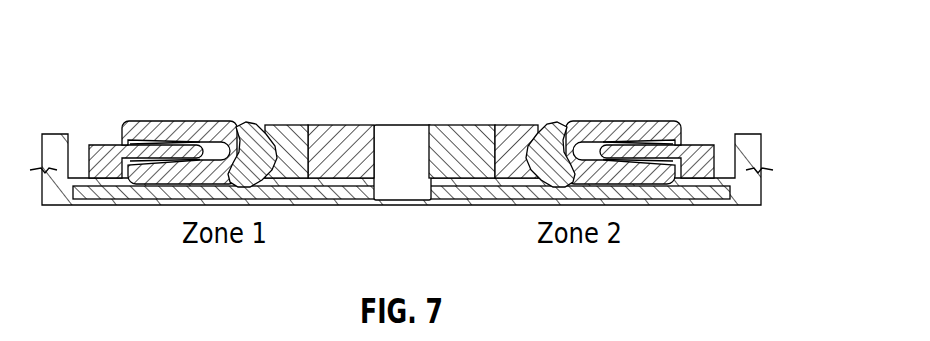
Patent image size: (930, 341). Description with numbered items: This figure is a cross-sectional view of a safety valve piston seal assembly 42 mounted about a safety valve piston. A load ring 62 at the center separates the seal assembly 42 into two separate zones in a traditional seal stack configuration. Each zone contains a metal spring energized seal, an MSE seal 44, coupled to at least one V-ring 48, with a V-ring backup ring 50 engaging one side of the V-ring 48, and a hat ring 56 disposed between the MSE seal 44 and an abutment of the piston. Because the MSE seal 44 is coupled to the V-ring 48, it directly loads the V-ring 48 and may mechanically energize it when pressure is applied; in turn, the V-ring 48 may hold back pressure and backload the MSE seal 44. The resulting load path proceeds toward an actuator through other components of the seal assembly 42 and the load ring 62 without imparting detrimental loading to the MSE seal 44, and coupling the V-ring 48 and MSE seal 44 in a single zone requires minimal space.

The safety valve piston seal assembly 42 is at (750, 44).
The metal spring energized (MSE) seal 44 is at (172, 129).
The V-ring 48 is at (248, 128).
The V-ring backup ring 50 is at (293, 130).
The hat ring 56 is at (706, 140).
The load ring 62 is at (400, 128).